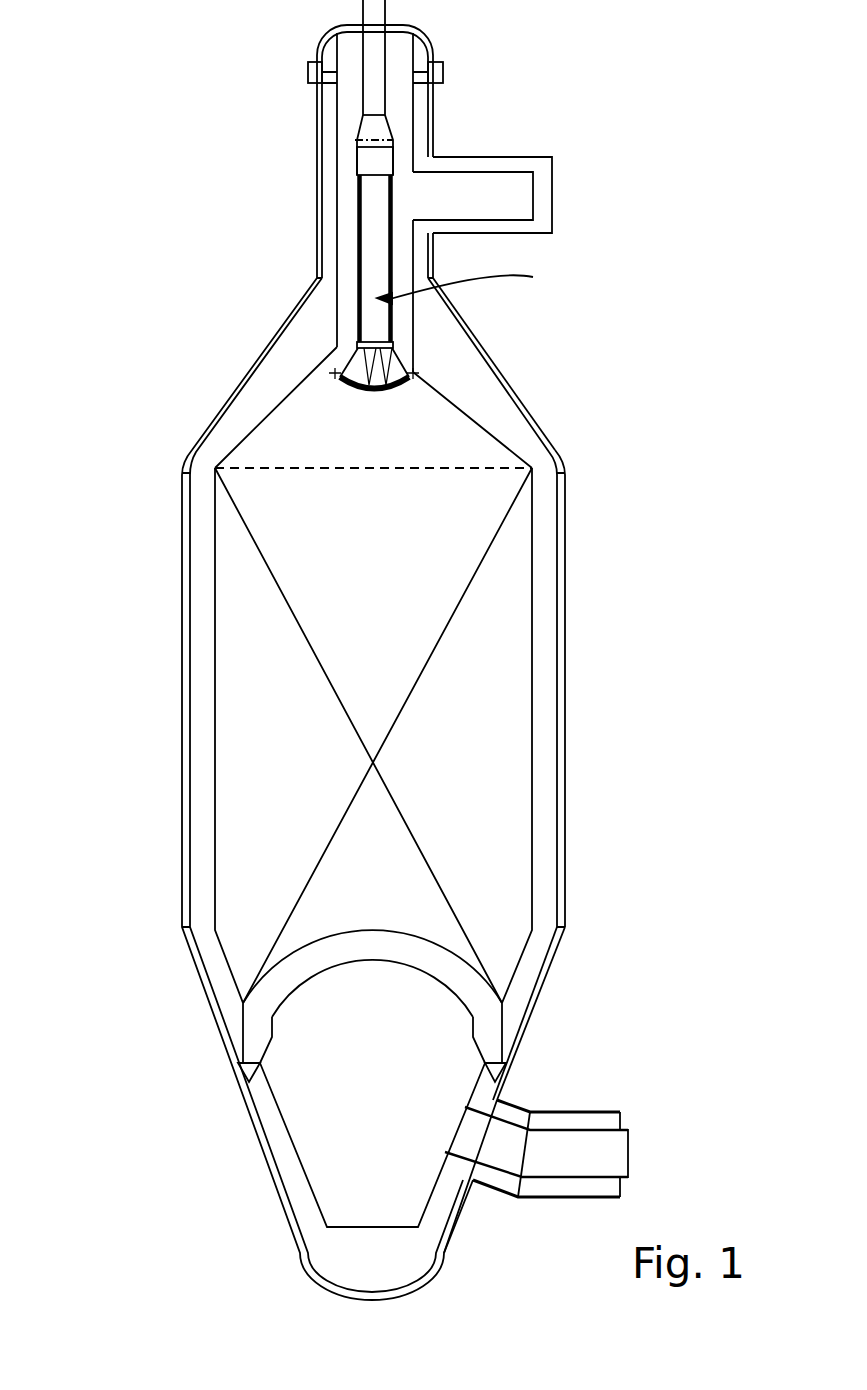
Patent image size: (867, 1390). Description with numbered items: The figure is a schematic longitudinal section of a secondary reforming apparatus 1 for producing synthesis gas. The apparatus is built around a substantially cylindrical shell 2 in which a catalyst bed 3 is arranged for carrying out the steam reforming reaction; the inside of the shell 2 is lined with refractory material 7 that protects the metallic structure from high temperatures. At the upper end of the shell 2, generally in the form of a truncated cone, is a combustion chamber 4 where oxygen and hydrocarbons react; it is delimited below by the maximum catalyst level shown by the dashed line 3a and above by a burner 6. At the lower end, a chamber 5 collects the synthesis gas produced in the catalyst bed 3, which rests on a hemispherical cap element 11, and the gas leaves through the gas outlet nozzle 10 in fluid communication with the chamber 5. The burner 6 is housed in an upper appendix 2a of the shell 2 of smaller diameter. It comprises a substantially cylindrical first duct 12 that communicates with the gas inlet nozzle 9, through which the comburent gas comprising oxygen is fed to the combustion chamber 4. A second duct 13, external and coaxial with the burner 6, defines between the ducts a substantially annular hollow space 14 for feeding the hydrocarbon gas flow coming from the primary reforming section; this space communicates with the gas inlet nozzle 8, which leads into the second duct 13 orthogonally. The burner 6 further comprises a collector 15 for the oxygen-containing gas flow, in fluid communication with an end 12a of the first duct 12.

The secondary reforming apparatus 1 is at (148, 848).
The shell 2 is at (565, 688).
The upper appendix 2a is at (318, 113).
The catalyst bed 3 is at (488, 736).
The dashed line 3a is at (460, 470).
The combustion chamber 4 is at (428, 433).
The chamber 5 is at (327, 1102).
The burner 6 is at (464, 282).
The refractory material 7 is at (313, 340).
The gas inlet nozzle 8 is at (495, 170).
The gas inlet nozzle 9 is at (377, 15).
The gas outlet nozzle 10 is at (590, 1120).
The hemispherical cap element 11 is at (287, 978).
The first duct 12 is at (357, 187).
The end of the first duct 12a is at (368, 350).
The second duct 13 is at (422, 123).
The annular hollow space 14 is at (347, 218).
The collector 15 is at (338, 378).